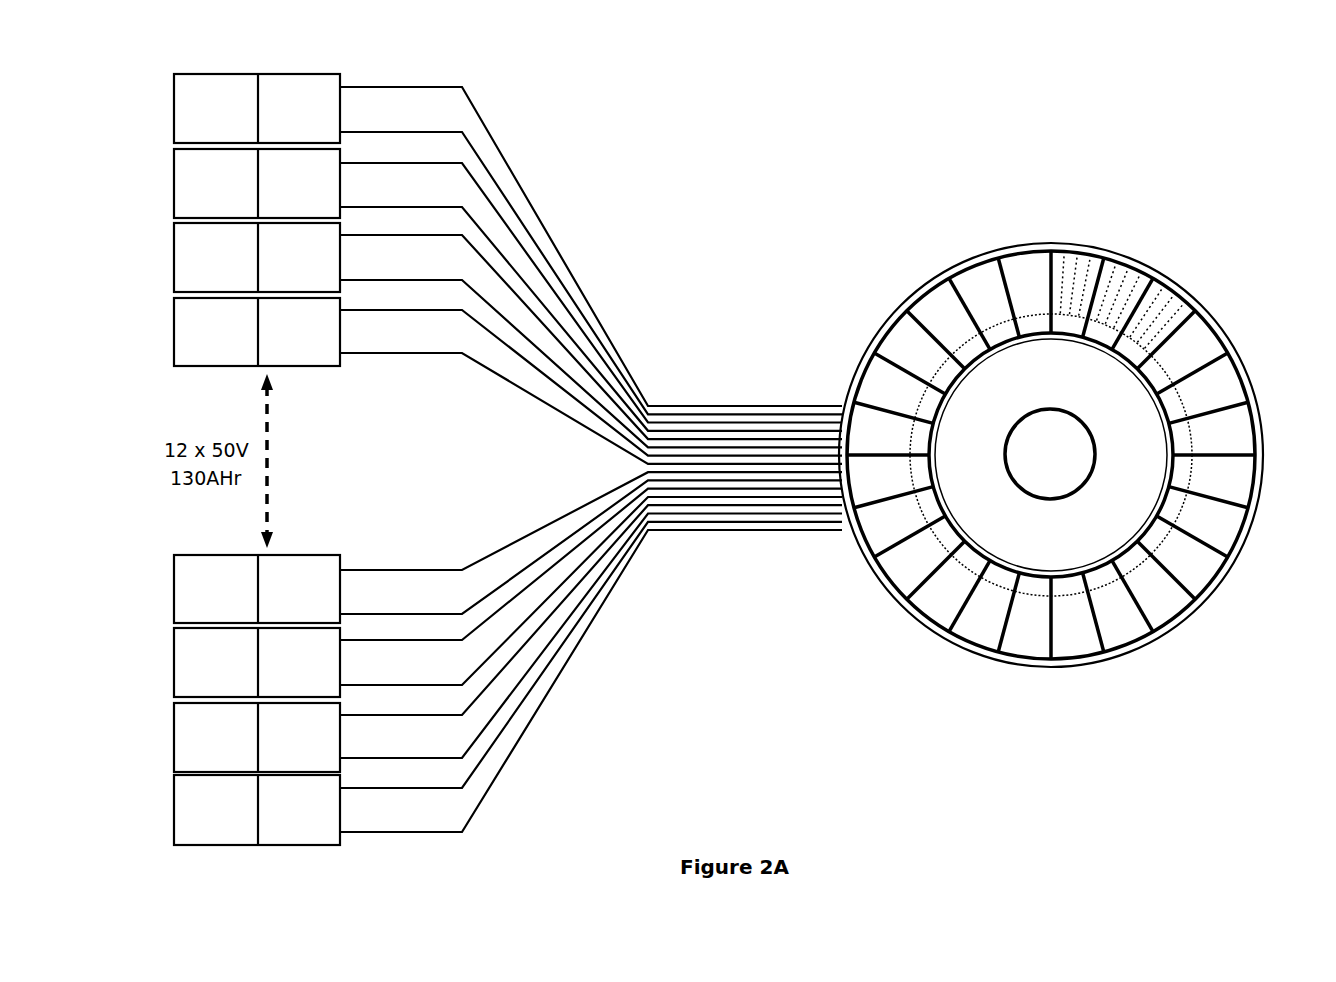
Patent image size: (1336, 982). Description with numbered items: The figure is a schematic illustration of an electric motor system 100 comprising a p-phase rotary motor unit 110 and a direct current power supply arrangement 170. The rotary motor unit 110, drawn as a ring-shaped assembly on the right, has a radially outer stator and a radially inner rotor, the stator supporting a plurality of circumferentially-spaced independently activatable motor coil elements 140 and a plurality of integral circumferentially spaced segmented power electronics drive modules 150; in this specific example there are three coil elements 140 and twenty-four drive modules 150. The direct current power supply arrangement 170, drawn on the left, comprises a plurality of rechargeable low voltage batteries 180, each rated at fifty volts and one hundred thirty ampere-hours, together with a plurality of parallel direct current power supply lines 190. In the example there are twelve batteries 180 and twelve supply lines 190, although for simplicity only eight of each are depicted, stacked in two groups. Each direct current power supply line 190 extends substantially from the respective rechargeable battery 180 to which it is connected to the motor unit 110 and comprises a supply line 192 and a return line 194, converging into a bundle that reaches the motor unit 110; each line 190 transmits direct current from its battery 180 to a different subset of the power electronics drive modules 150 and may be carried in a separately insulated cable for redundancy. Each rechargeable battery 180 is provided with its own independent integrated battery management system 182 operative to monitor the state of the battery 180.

The electric motor system 100 is at (1087, 548).
The rotary motor unit 110 is at (1190, 638).
The motor coil elements 140 is at (1135, 288).
The power electronics drive modules 150 is at (1222, 373).
The direct current power supply arrangement 170 is at (598, 135).
The rechargeable battery 180 is at (327, 368).
The battery management system 182 is at (175, 112).
The direct current power supply lines 190 is at (591, 459).
The supply line 192 is at (742, 407).
The return line 194 is at (805, 413).